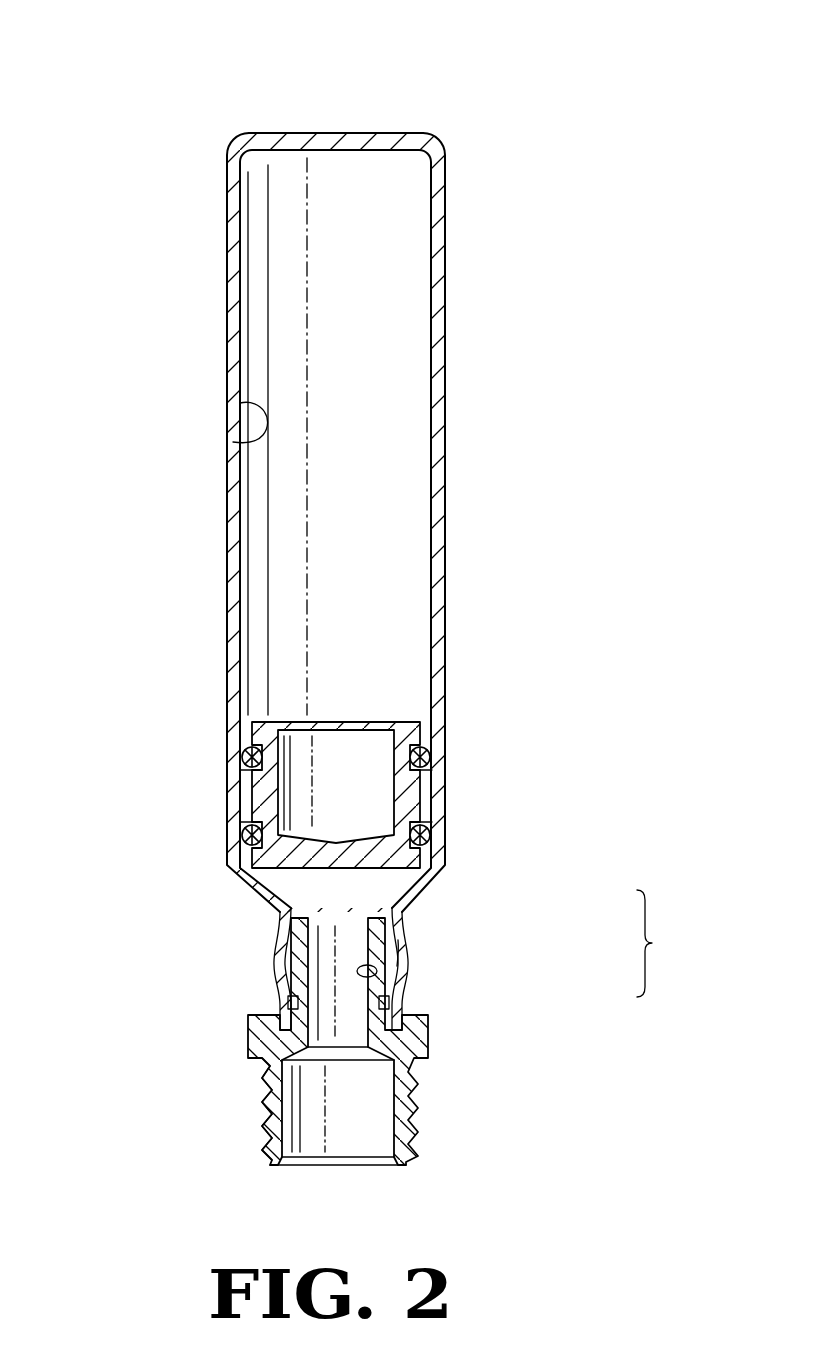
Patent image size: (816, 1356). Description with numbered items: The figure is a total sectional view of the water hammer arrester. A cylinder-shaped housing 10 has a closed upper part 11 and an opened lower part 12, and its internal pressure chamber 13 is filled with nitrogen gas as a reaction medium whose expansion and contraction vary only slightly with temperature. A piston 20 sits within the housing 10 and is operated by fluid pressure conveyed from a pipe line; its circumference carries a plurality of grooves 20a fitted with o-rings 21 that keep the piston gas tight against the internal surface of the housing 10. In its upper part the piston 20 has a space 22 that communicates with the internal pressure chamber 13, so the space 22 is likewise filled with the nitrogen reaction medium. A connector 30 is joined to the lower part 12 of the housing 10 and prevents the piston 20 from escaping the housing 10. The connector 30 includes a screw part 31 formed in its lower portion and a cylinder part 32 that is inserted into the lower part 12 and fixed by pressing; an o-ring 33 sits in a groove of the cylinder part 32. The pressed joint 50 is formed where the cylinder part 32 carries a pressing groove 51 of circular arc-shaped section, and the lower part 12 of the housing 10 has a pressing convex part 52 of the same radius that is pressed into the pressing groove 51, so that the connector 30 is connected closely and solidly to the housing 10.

The housing 10 is at (227, 302).
The closed upper part 11 is at (332, 133).
The opened lower part 12 is at (288, 999).
The internal pressure chamber 13 is at (233, 442).
The piston 20 is at (268, 792).
The grooves 20a is at (240, 770).
The o-rings 21 is at (428, 833).
The space 22 is at (328, 748).
The connector 30 is at (432, 1052).
The screw part 31 is at (256, 1097).
The cylinder part 32 is at (287, 920).
The o-ring 33 is at (407, 1003).
The pressing connection 50 is at (672, 943).
The pressing groove 51 is at (400, 950).
The pressing convex part 52 is at (377, 971).